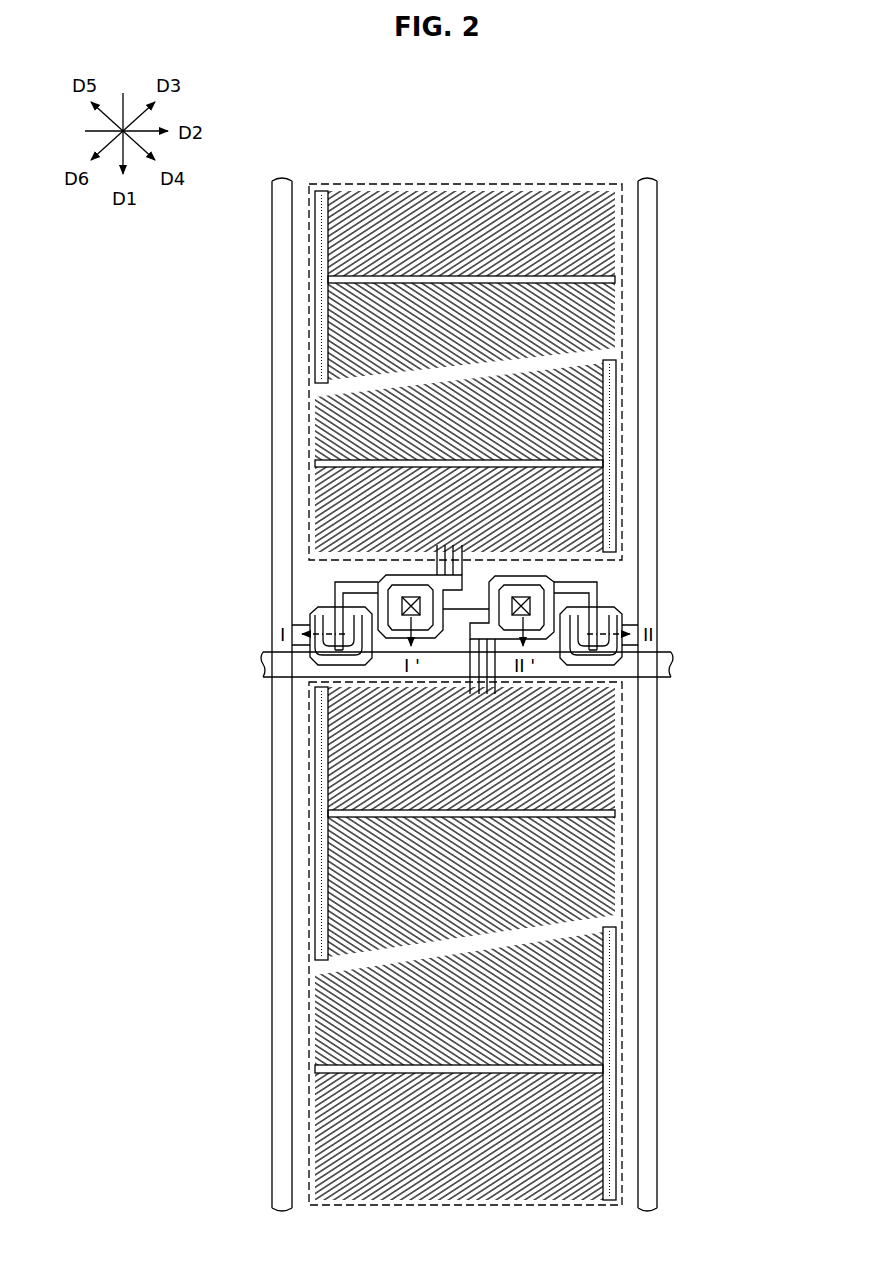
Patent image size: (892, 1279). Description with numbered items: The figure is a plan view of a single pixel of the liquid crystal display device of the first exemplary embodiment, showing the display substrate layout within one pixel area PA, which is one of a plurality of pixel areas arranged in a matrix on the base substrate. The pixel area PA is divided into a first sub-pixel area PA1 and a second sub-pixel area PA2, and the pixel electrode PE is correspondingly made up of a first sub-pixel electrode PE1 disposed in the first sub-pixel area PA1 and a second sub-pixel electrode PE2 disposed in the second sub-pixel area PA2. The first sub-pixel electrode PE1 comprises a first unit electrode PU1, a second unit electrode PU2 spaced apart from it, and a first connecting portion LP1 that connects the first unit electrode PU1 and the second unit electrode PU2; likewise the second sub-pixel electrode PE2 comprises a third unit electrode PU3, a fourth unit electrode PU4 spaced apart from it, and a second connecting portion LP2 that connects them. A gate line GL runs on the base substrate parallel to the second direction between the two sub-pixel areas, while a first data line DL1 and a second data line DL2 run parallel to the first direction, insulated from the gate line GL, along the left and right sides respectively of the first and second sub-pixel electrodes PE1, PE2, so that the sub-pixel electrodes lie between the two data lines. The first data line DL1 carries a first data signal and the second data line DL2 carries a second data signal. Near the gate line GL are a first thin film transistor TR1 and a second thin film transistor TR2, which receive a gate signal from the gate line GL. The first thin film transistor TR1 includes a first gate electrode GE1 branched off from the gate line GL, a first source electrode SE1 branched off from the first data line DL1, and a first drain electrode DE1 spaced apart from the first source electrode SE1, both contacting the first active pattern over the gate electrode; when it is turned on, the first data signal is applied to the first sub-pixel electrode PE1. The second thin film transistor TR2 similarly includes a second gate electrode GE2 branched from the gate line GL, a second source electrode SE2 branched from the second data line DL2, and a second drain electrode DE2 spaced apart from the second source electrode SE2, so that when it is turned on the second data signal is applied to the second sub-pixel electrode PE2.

The first unit electrode PU1 is at (307, 238).
The second unit electrode PU2 is at (403, 467).
The third unit electrode PU3 is at (307, 800).
The fourth unit electrode PU4 is at (403, 1063).
The first connecting portion LP1 is at (475, 370).
The second connecting portion LP2 is at (475, 937).
The first sub-pixel electrode PE1 is at (377, 383).
The second sub-pixel electrode PE2 is at (377, 919).
The pixel electrode PE is at (356, 695).
The first data line DL1 is at (283, 542).
The second data line DL2 is at (648, 402).
The gate line GL is at (672, 667).
The pixel area PA is at (558, 694).
The first sub-pixel area PA1 is at (628, 350).
The second sub-pixel area PA2 is at (536, 943).
The first thin film transistor TR1 is at (300, 623).
The second thin film transistor TR2 is at (619, 615).
The first gate electrode GE1 is at (327, 607).
The second gate electrode GE2 is at (605, 606).
The first source electrode SE1 is at (330, 661).
The second source electrode SE2 is at (602, 662).
The first drain electrode DE1 is at (342, 632).
The second drain electrode DE2 is at (592, 583).